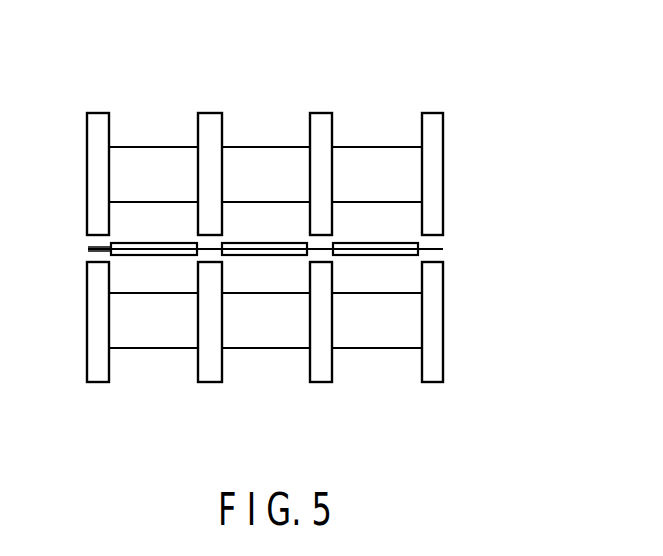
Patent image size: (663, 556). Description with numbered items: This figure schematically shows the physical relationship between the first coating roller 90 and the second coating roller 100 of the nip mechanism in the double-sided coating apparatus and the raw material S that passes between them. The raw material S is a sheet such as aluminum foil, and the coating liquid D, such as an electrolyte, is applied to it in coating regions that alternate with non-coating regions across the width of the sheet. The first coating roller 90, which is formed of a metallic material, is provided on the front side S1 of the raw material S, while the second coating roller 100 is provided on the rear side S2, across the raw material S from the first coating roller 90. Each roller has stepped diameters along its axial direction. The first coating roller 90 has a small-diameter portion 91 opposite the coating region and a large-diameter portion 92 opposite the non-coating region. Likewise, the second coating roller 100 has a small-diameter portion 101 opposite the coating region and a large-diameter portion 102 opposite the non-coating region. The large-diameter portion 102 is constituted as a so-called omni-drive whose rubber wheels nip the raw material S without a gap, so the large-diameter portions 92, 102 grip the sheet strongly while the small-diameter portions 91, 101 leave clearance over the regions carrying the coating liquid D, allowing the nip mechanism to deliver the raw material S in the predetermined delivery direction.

The first coating roller 90 is at (288, 124).
The small-diameter portion 91 is at (272, 147).
The large-diameter portion 92 is at (323, 113).
The second coating roller 100 is at (294, 360).
The small-diameter portion 101 is at (245, 348).
The large-diameter portion 102 is at (428, 382).
The coating liquid D is at (151, 243).
The raw material S is at (428, 248).
The front side S1 is at (92, 246).
The rear side S2 is at (92, 252).